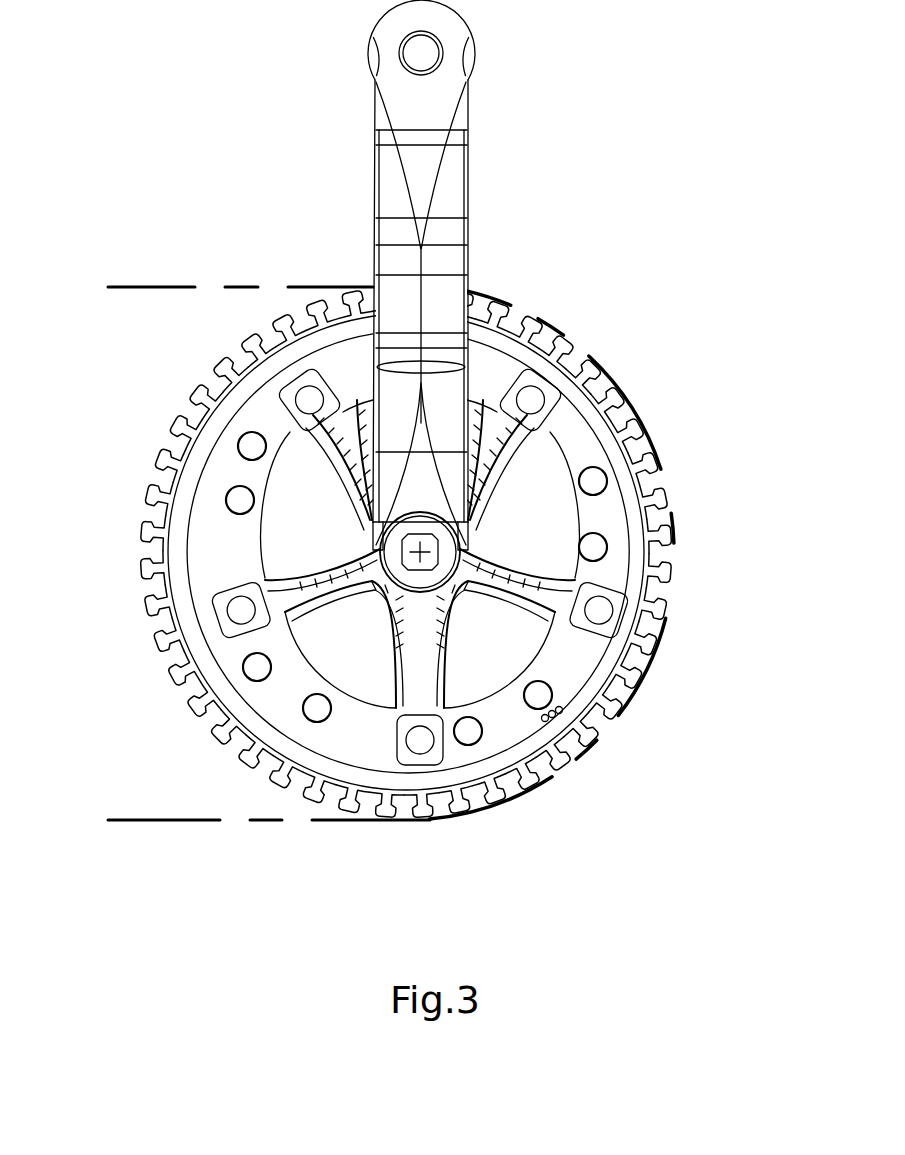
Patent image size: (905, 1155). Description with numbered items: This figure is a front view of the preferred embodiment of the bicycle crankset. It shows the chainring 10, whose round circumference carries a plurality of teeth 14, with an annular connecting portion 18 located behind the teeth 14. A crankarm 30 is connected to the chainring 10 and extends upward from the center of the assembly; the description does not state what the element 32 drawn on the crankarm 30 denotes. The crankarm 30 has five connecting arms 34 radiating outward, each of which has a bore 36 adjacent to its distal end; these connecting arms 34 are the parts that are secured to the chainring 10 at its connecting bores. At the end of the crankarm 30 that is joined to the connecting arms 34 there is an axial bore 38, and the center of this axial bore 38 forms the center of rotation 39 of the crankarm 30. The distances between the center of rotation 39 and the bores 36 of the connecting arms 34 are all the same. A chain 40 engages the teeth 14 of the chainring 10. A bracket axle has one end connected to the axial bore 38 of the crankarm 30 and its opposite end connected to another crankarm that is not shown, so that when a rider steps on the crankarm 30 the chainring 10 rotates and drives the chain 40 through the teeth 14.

The chainring 10 is at (130, 440).
The teeth 14 is at (587, 355).
The annular connecting portion 18 is at (653, 450).
The crankarm 30 is at (486, 153).
The crank arm body 32 is at (388, 190).
The connecting arms 34 is at (512, 452).
The bore 36 is at (528, 385).
The axial bore 38 is at (442, 560).
The center of rotation 39 is at (418, 553).
The chain 40 is at (172, 287).